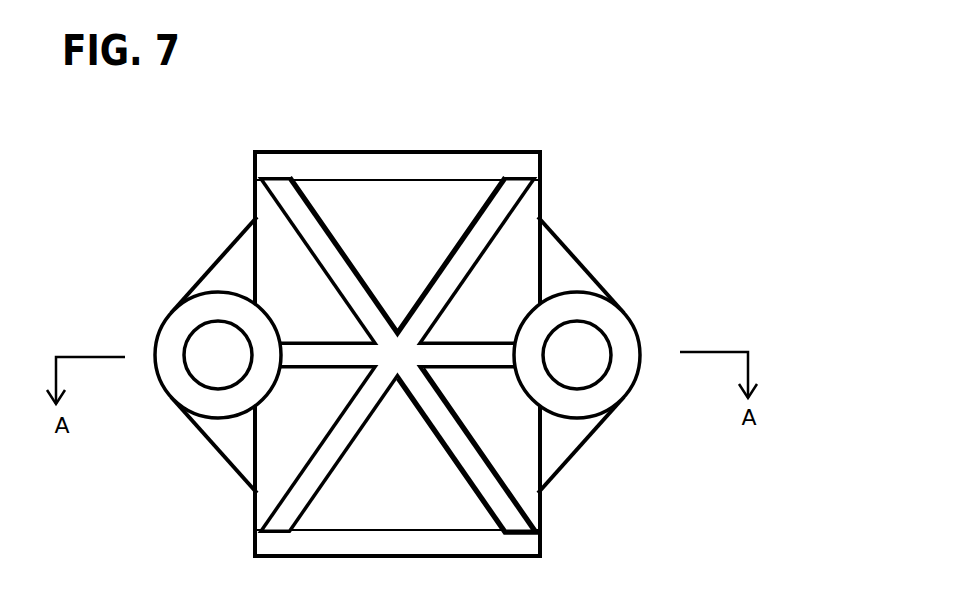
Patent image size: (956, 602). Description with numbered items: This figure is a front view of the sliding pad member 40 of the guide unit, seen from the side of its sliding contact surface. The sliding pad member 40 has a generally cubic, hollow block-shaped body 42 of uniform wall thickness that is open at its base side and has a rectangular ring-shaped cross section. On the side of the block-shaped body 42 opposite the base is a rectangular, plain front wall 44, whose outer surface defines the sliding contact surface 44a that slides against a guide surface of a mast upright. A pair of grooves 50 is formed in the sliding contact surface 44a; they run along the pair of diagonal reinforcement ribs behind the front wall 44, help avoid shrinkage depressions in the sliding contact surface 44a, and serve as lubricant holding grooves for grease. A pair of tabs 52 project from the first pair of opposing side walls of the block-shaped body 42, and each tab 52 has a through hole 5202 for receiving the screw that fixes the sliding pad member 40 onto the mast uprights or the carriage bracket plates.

The sliding pad member 40 is at (419, 327).
The block-shaped body 42 is at (500, 148).
The front wall 44 is at (455, 349).
The sliding contact surface 44a is at (440, 220).
The grooves 50 is at (442, 430).
The tabs 52 is at (419, 356).
The through hole 5202 is at (595, 335).